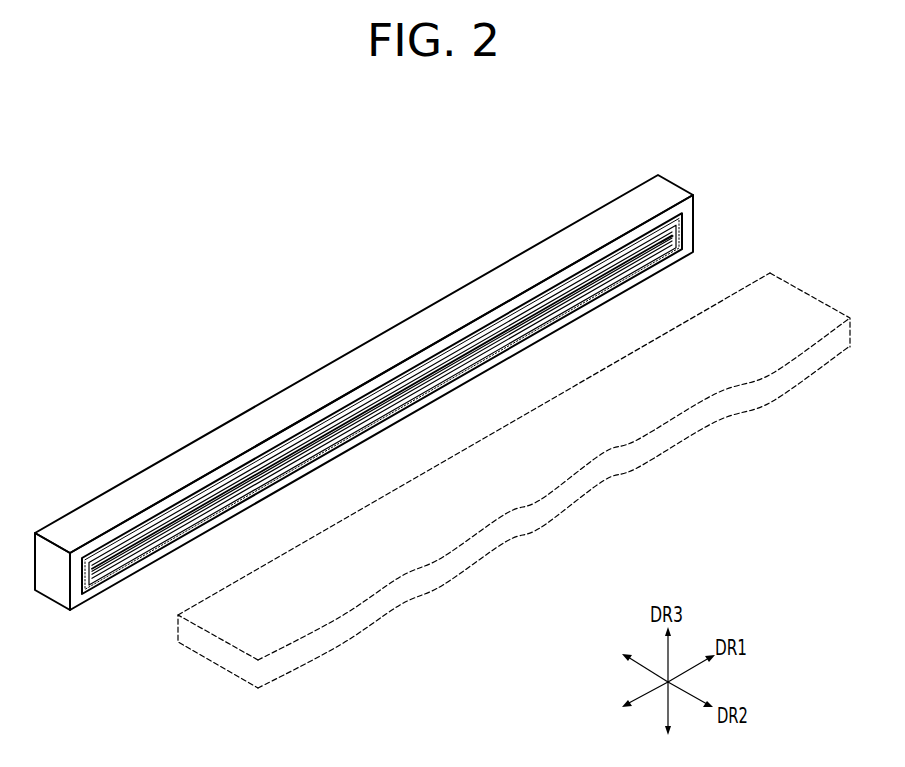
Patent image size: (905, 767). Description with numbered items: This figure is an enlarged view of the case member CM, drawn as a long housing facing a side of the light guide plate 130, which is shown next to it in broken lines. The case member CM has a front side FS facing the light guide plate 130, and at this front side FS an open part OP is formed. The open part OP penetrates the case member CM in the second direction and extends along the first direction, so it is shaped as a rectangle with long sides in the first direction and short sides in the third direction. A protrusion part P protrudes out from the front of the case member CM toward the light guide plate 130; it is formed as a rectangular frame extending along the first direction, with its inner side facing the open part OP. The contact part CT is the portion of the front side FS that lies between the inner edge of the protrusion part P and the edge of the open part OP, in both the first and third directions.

The case member CM is at (180, 458).
The open part OP is at (106, 565).
The front side FS is at (232, 466).
The protrusion part P is at (357, 442).
The contact part CT is at (673, 237).
The light guide plate 130 is at (222, 655).